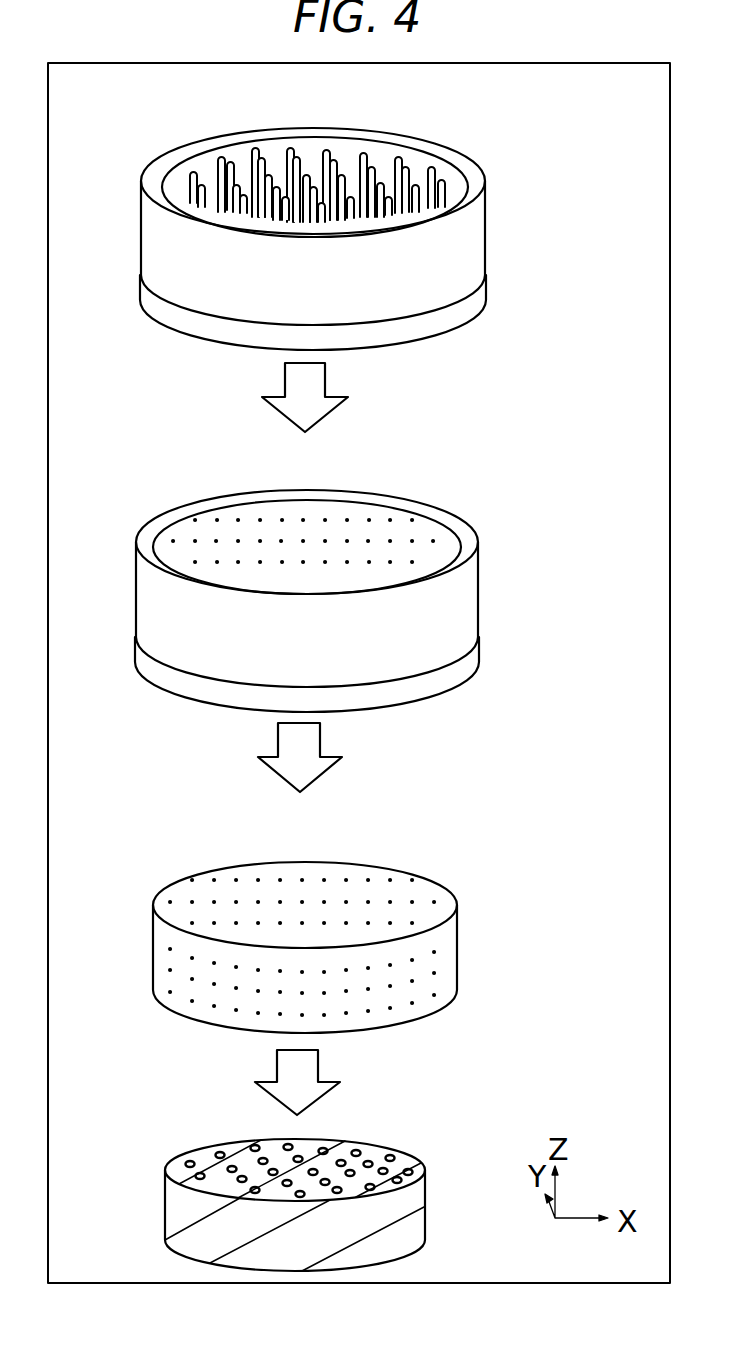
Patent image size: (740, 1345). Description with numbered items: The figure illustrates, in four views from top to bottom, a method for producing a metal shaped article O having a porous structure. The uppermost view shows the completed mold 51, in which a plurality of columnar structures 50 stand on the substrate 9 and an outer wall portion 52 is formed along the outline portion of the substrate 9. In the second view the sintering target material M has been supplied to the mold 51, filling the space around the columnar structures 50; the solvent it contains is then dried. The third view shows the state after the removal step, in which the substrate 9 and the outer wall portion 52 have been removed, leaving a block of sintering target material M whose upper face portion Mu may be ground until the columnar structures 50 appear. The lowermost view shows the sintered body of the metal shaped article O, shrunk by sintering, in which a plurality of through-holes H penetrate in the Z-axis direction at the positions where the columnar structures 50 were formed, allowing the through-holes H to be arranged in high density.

The columnar structures 50 is at (328, 148).
The mold 51 is at (512, 162).
The outer wall portion 52 is at (423, 140).
The substrate 9 is at (438, 318).
The sintering target material M is at (502, 903).
The upper face portion Mu is at (317, 872).
The metal shaped article having a porous structure O is at (467, 1160).
The through-holes H is at (188, 1160).